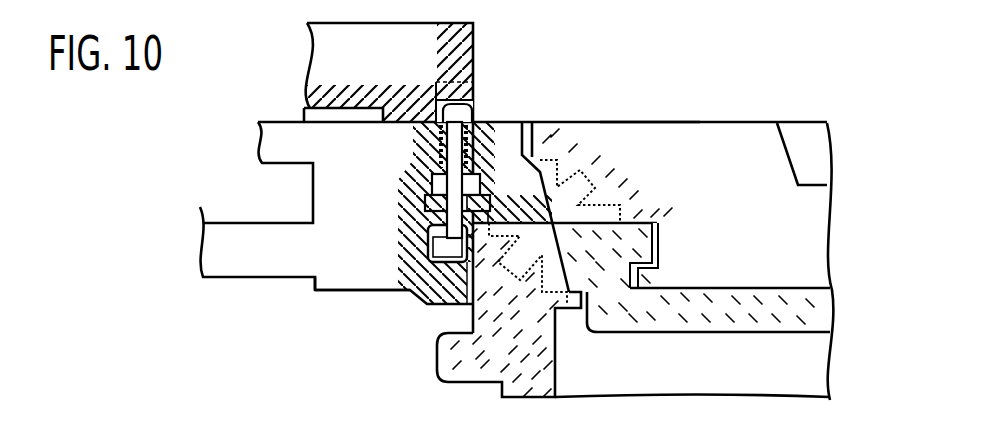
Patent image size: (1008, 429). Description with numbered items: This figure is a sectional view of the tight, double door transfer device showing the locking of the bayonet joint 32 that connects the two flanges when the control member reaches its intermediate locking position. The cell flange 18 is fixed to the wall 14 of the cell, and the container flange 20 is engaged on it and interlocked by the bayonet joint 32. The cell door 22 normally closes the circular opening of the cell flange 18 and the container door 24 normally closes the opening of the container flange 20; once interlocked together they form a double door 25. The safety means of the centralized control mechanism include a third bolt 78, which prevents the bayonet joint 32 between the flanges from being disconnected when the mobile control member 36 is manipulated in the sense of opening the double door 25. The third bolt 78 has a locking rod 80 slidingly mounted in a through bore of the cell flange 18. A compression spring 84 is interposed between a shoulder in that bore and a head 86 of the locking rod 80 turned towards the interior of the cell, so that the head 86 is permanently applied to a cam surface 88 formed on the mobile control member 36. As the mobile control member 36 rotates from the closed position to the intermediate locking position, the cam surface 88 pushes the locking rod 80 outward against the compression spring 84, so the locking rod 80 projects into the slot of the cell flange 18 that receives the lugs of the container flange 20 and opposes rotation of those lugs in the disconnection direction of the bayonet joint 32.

The wall 14 is at (245, 262).
The cell flange 18 is at (348, 278).
The container flange 20 is at (472, 372).
The cell door 22 is at (743, 138).
The container door 24 is at (766, 314).
The double door 25 is at (657, 122).
The bayonet joint 32 is at (427, 315).
The mobile control member 36 is at (320, 52).
The third bolt 78 is at (493, 78).
The locking rod 80 is at (426, 145).
The compression spring 84 is at (421, 138).
The head 86 is at (436, 100).
The cam surface 88 is at (473, 113).